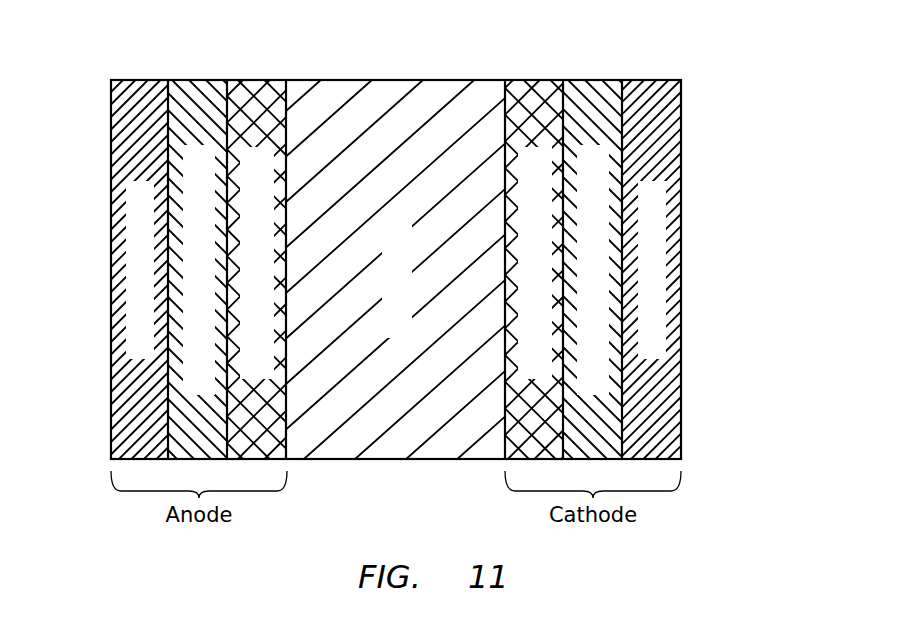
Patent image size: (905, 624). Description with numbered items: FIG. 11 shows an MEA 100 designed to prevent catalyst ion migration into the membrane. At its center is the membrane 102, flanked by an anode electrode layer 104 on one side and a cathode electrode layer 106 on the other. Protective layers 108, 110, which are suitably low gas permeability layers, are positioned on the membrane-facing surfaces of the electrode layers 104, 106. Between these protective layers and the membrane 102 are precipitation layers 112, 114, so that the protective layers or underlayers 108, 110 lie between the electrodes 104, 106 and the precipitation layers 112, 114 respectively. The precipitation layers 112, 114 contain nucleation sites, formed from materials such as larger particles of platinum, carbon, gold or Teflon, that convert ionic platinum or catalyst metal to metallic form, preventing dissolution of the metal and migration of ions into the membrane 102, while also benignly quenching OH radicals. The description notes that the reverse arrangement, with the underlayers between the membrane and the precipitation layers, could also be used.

The MEA 100 is at (778, 190).
The membrane 102 is at (357, 447).
The anode electrode layer 104 is at (131, 429).
The cathode electrode layer 106 is at (670, 419).
The protective layer 108 is at (193, 83).
The protective layer 110 is at (594, 88).
The precipitation layer 112 is at (256, 88).
The precipitation layer 114 is at (528, 88).